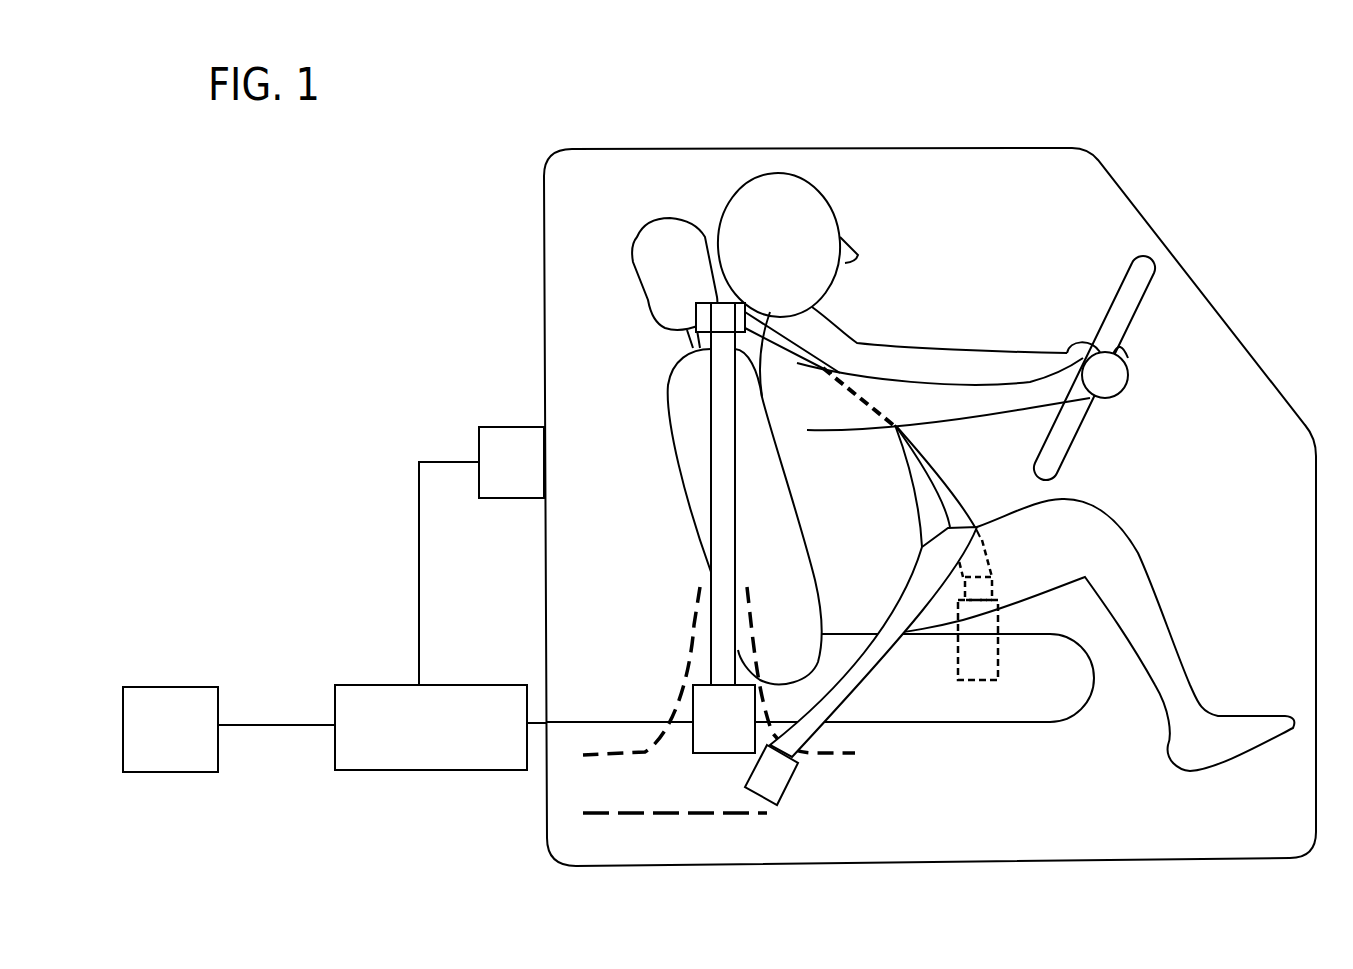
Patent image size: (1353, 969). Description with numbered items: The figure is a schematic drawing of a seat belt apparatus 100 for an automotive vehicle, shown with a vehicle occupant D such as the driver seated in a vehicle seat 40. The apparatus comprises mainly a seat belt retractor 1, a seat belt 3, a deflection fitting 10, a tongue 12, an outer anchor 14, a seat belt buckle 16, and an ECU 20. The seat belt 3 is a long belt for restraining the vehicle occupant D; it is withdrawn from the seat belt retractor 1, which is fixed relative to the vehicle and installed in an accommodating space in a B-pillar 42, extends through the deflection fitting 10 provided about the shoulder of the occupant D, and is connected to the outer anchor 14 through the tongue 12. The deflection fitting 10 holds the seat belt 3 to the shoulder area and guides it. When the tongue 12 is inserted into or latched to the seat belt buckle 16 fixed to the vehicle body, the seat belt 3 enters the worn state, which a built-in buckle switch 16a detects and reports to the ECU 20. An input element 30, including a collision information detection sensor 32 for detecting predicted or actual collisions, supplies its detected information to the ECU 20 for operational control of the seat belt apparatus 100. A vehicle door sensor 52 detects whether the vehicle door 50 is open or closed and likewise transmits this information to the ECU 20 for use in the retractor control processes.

The seat belt apparatus 100 is at (389, 382).
The vehicle door 50 is at (543, 240).
The vehicle door sensor 52 is at (518, 444).
The input element 30 is at (190, 683).
The collision information detection sensor 32 is at (225, 666).
The ECU 20 is at (388, 682).
The vehicle seat 40 is at (673, 417).
The seat belt 3 is at (710, 573).
The vehicle occupant D is at (887, 343).
The B-pillar 42 is at (688, 653).
The deflection fitting 10 is at (703, 303).
The tongue 12 is at (973, 587).
The outer anchor 14 is at (775, 773).
The seat belt buckle 16 is at (970, 665).
The buckle switch 16a is at (950, 688).
The seat belt retractor 1 is at (722, 756).